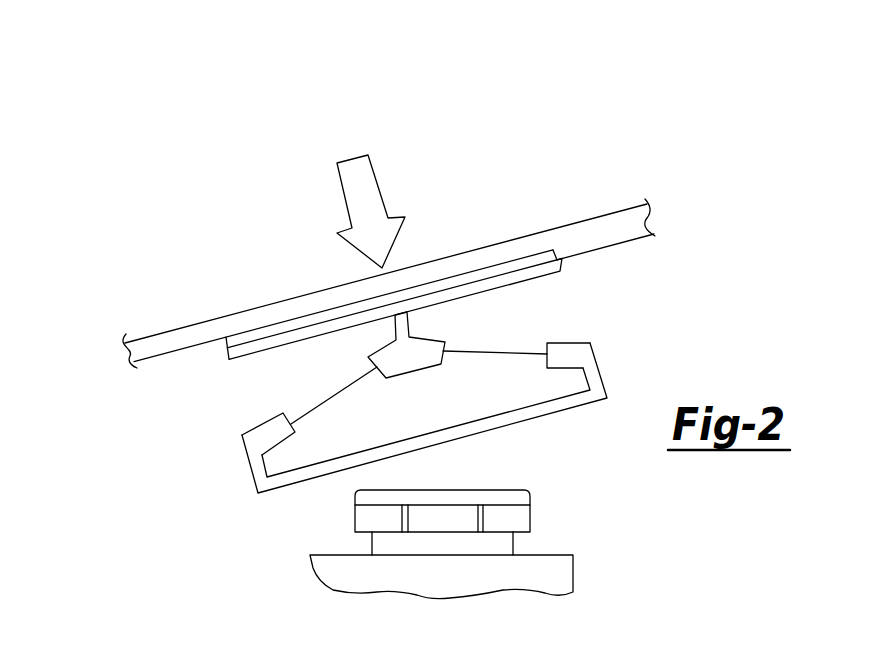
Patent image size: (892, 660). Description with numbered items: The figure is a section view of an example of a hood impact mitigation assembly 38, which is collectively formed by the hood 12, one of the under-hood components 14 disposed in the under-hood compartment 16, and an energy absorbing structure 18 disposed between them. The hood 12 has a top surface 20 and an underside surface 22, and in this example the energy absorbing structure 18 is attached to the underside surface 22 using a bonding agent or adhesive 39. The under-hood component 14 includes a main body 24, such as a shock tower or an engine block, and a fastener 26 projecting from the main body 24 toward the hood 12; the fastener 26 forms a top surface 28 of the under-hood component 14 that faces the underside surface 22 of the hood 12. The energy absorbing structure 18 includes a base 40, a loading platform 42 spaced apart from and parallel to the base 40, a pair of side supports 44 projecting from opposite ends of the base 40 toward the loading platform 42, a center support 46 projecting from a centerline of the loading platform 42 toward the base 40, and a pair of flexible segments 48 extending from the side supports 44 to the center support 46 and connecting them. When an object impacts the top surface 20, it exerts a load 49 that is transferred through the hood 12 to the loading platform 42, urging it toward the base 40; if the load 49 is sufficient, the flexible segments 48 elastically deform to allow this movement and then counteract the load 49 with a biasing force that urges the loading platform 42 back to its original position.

The hood 12 is at (363, 307).
The under-hood component 14 is at (501, 519).
The under-hood compartment 16 is at (427, 391).
The energy absorbing structure 18 is at (467, 362).
The top surface 20 is at (143, 333).
The underside surface 22 is at (140, 363).
The main body 24 is at (562, 554).
The fastener 26 is at (488, 497).
The top surface 28 is at (474, 491).
The hood impact mitigation assembly 38 is at (650, 128).
The adhesive 39 is at (554, 250).
The base 40 is at (426, 431).
The loading platform 42 is at (565, 265).
The side supports 44 is at (239, 431).
The center support 46 is at (440, 332).
The flexible segments 48 is at (310, 412).
The load 49 is at (380, 187).